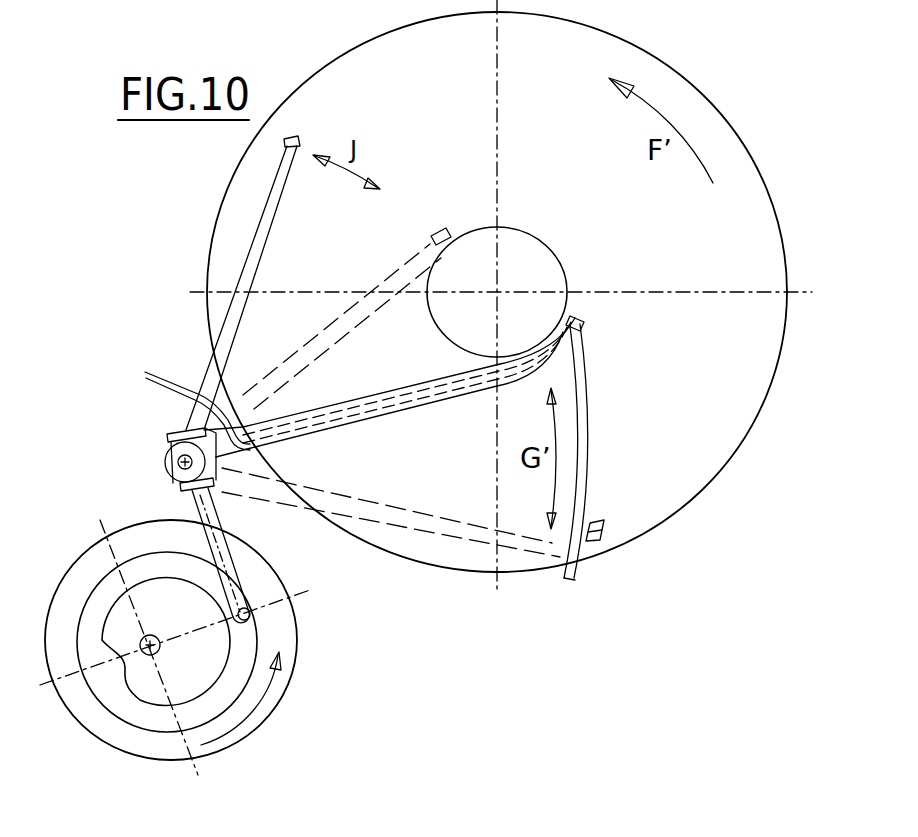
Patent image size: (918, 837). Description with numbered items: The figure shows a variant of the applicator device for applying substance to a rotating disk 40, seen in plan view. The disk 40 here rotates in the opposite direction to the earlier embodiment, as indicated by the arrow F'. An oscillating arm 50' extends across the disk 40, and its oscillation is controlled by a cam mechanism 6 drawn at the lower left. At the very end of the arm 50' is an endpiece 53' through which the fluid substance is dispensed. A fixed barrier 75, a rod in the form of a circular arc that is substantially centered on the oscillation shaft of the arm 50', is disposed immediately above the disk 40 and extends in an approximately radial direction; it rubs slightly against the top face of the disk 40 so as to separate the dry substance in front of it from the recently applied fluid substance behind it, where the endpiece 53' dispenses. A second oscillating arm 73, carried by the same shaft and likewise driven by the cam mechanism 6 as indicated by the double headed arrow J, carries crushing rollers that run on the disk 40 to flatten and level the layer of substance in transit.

The disk 40 is at (740, 138).
The second oscillating arm 73 is at (247, 256).
The oscillating arm 50' is at (390, 396).
The endpiece 53' is at (618, 339).
The fixed barrier 75 is at (591, 500).
The cam mechanism 6 is at (59, 554).